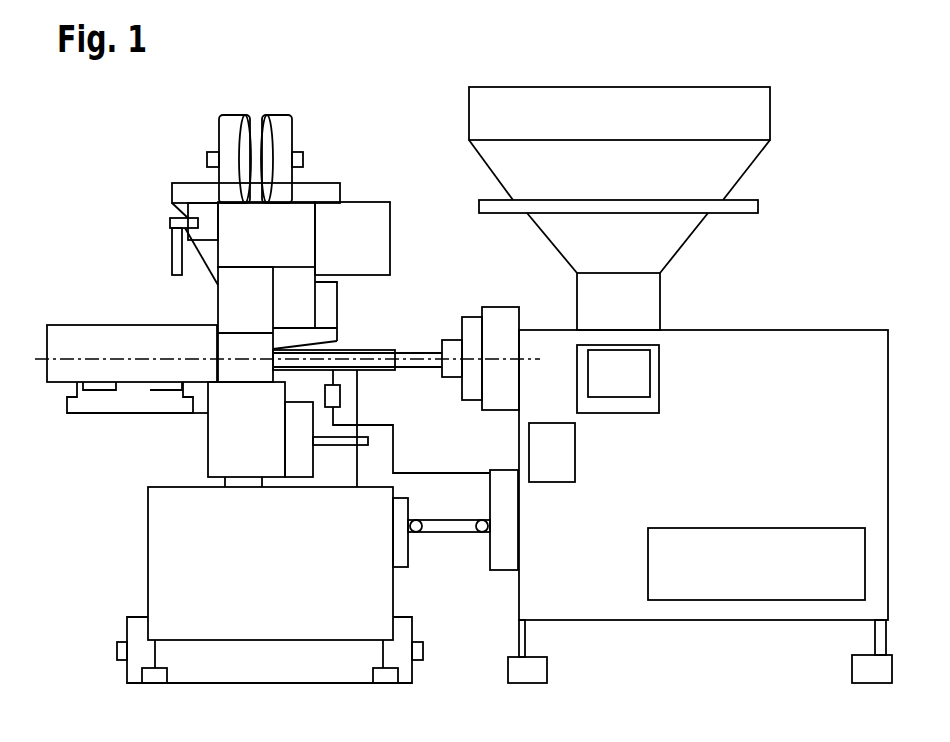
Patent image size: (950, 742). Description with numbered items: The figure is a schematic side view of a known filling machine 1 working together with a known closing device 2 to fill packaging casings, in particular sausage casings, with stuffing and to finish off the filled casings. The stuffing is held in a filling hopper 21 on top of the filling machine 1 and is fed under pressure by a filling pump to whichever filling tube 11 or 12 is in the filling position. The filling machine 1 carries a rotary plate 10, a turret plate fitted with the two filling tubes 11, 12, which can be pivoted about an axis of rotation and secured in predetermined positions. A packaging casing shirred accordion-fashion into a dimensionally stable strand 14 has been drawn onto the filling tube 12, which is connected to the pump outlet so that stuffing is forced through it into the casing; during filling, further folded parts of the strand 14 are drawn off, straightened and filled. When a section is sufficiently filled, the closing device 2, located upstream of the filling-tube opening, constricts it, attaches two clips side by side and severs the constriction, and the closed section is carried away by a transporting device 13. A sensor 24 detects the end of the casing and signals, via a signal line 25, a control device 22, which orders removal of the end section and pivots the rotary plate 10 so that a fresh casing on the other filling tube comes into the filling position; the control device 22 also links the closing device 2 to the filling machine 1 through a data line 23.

The filling machine 1 is at (782, 174).
The closing device 2 is at (148, 279).
The rotary plate 10 is at (498, 330).
The filling tube 11 is at (415, 348).
The filling tube 12 is at (357, 360).
The transporting device 13 is at (92, 338).
The strand 14 is at (357, 347).
The filling hopper 21 is at (641, 115).
The control device 22 is at (502, 560).
The data line 23 is at (452, 530).
The sensor 24 is at (333, 396).
The signal line 25 is at (396, 437).